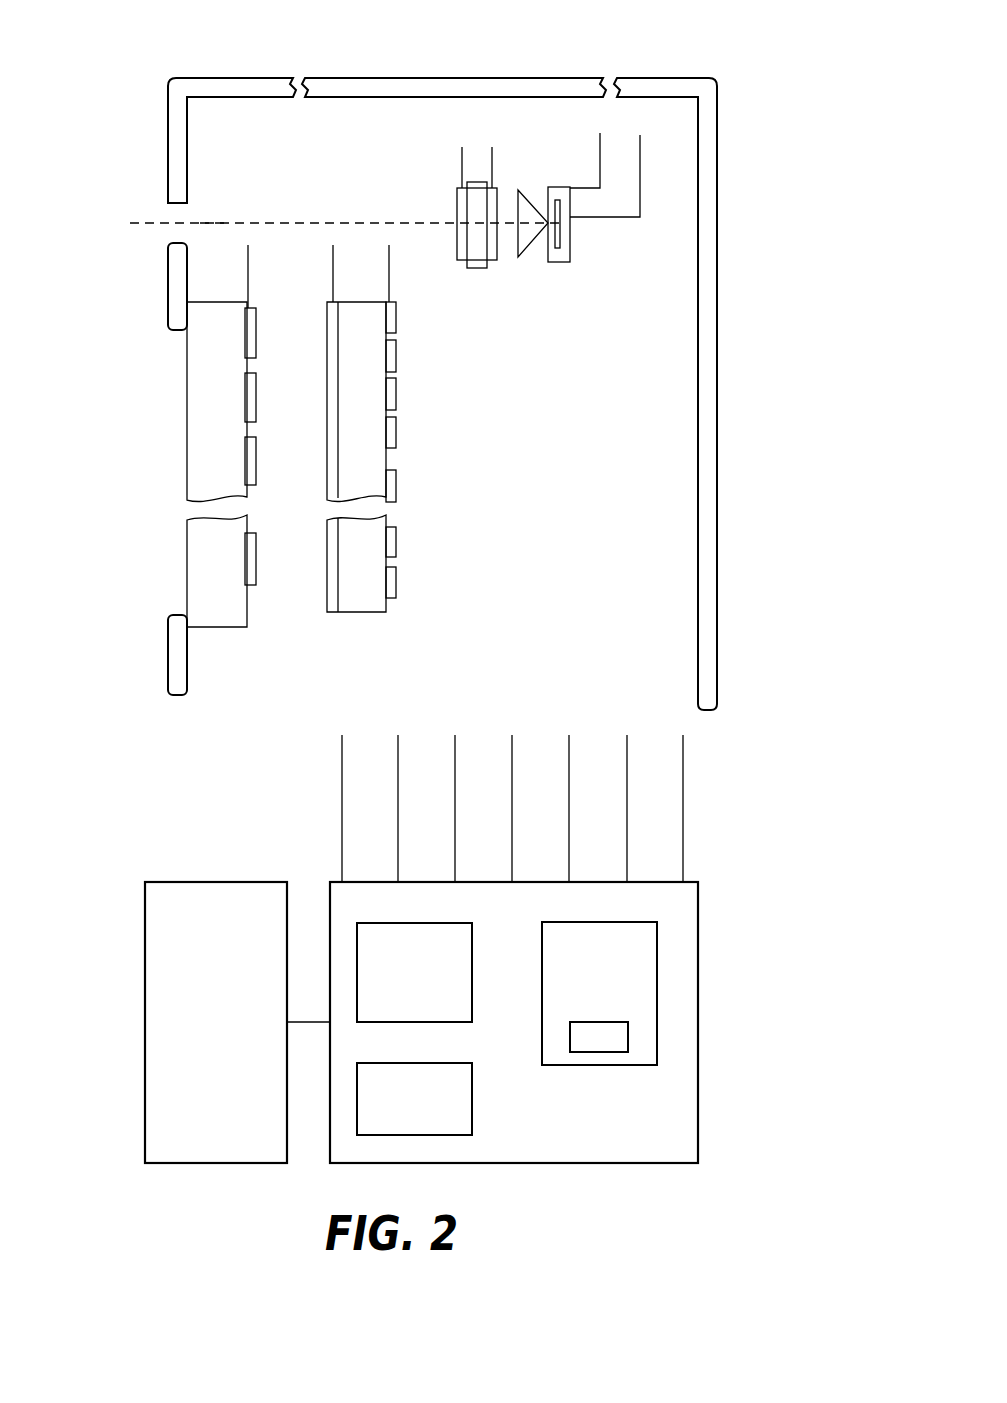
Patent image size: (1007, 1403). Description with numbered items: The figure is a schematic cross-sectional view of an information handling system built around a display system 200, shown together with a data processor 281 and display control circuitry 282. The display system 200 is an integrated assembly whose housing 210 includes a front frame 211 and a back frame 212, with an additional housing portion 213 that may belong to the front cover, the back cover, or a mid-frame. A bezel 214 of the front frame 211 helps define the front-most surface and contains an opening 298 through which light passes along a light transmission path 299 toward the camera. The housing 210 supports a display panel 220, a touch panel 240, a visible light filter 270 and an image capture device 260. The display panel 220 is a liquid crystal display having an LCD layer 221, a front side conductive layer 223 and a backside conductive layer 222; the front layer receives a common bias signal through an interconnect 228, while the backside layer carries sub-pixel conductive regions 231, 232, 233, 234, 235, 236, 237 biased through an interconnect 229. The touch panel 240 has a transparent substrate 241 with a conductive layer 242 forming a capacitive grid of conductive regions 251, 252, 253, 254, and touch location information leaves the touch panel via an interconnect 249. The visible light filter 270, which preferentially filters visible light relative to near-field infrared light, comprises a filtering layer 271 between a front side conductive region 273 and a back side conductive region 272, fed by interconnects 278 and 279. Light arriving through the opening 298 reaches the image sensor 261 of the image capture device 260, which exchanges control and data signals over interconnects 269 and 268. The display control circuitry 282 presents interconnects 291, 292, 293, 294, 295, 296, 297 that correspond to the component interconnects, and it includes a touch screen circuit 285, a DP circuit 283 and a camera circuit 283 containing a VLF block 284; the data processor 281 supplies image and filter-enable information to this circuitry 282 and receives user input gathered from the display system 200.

The display system 200 is at (772, 130).
The housing 210 is at (140, 96).
The front frame 211 is at (232, 77).
The back frame 212 is at (688, 77).
The housing portion 213 is at (537, 77).
The bezel 214 is at (118, 239).
The display panel 220 is at (421, 672).
The LCD layer 221 is at (388, 633).
The backside conductive layer 222 is at (394, 608).
The front side conductive layer 223 is at (330, 626).
The interconnect 228 is at (333, 266).
The interconnect 229 is at (389, 262).
The conductive region 231 is at (427, 317).
The conductive region 232 is at (397, 350).
The conductive region 233 is at (427, 387).
The conductive region 234 is at (397, 437).
The conductive region 235 is at (427, 472).
The conductive region 236 is at (397, 540).
The conductive region 237 is at (397, 578).
The touch panel 240 is at (276, 685).
The transparent substrate 241 is at (247, 640).
The conductive layer 242 is at (253, 603).
The interconnect 249 is at (248, 266).
The conductive region 251 is at (257, 323).
The conductive region 252 is at (285, 395).
The conductive region 253 is at (285, 447).
The conductive region 254 is at (285, 547).
The image capture device 260 is at (568, 276).
The image sensor 261 is at (570, 233).
The interconnect 268 is at (600, 162).
The interconnect 269 is at (641, 145).
The visible light filter 270 is at (491, 289).
The filtering layer 271 is at (488, 268).
The back side conductive region 272 is at (519, 192).
The front side conductive region 273 is at (458, 192).
The interconnect 278 is at (462, 160).
The interconnect 279 is at (493, 157).
The data processor 281 is at (145, 910).
The display control circuitry 282 is at (698, 908).
The camera circuit / DP circuit 283 is at (433, 1063).
The VLF circuit 284 is at (597, 1022).
The touch screen circuit 285 is at (433, 922).
The interconnect 291 is at (342, 786).
The interconnect 292 is at (398, 786).
The interconnect 293 is at (455, 786).
The interconnect 294 is at (512, 786).
The interconnect 295 is at (569, 786).
The interconnect 296 is at (627, 786).
The interconnect 297 is at (683, 786).
The opening 298 is at (133, 197).
The light transmission path 299 is at (215, 223).